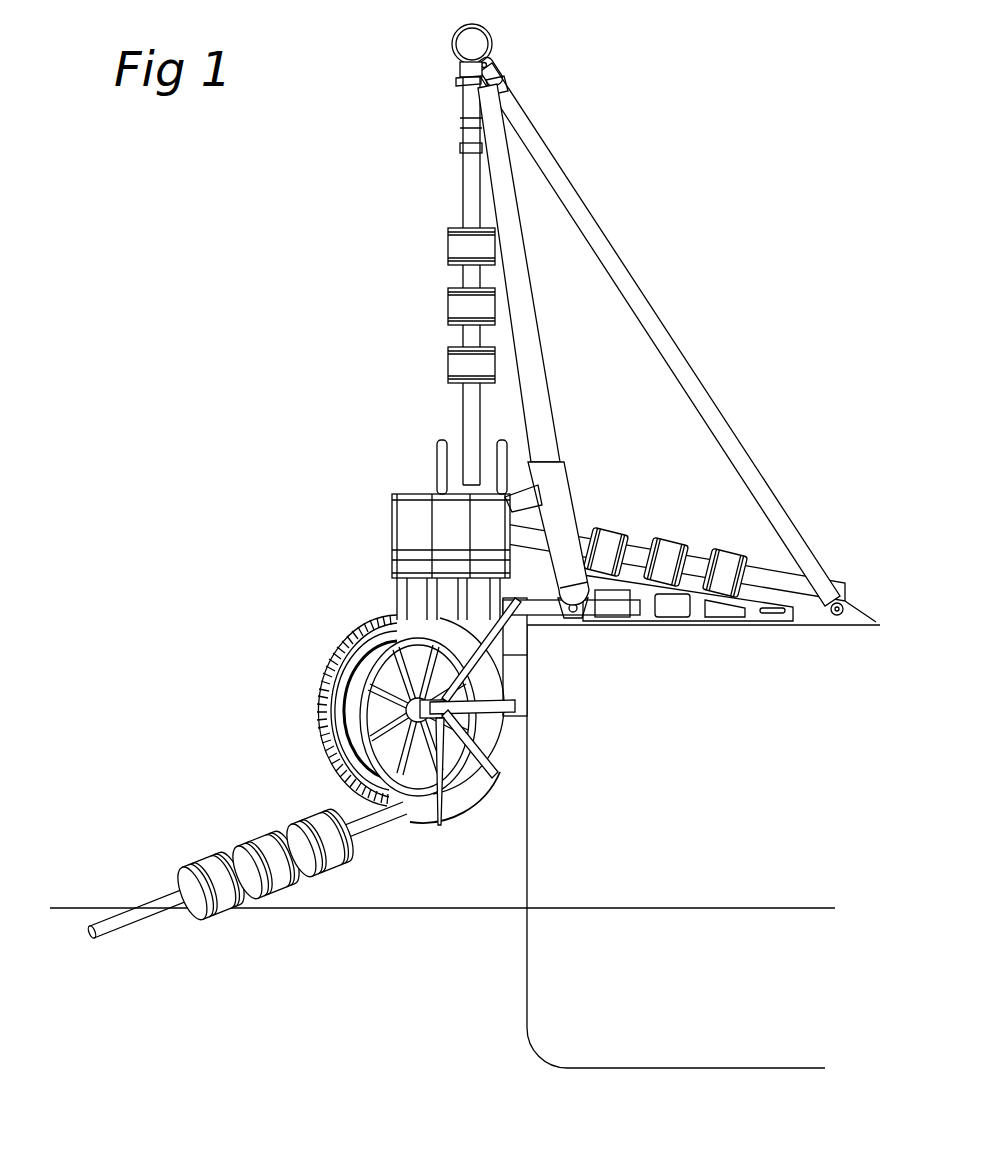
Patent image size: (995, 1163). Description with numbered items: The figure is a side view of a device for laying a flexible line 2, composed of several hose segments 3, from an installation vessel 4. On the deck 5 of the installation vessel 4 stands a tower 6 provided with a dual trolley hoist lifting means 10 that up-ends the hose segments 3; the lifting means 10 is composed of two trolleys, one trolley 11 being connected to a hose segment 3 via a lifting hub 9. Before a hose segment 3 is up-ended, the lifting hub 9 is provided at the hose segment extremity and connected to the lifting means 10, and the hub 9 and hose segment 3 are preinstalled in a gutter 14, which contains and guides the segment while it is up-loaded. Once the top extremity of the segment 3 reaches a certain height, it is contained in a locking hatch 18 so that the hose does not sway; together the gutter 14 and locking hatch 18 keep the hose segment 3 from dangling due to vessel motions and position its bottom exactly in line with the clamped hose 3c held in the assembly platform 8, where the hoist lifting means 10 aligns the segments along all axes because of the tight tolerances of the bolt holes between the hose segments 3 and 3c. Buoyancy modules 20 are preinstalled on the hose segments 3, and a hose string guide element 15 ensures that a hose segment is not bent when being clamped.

The flexible line 2 is at (198, 858).
The hose segment 3 is at (473, 197).
The clamped hose 3c is at (467, 627).
The installation vessel 4 is at (552, 857).
The deck 5 is at (875, 620).
The tower 6 is at (515, 272).
The assembly platform 8 is at (402, 555).
The lifting hub 9 is at (472, 123).
The dual trolley hoist lifting means 10 is at (441, 74).
The trolley 11 is at (465, 100).
The gutter 14 is at (703, 603).
The hose string guide element 15 is at (350, 725).
The locking hatch 18 is at (533, 493).
The buoyancy modules 20 is at (457, 248).